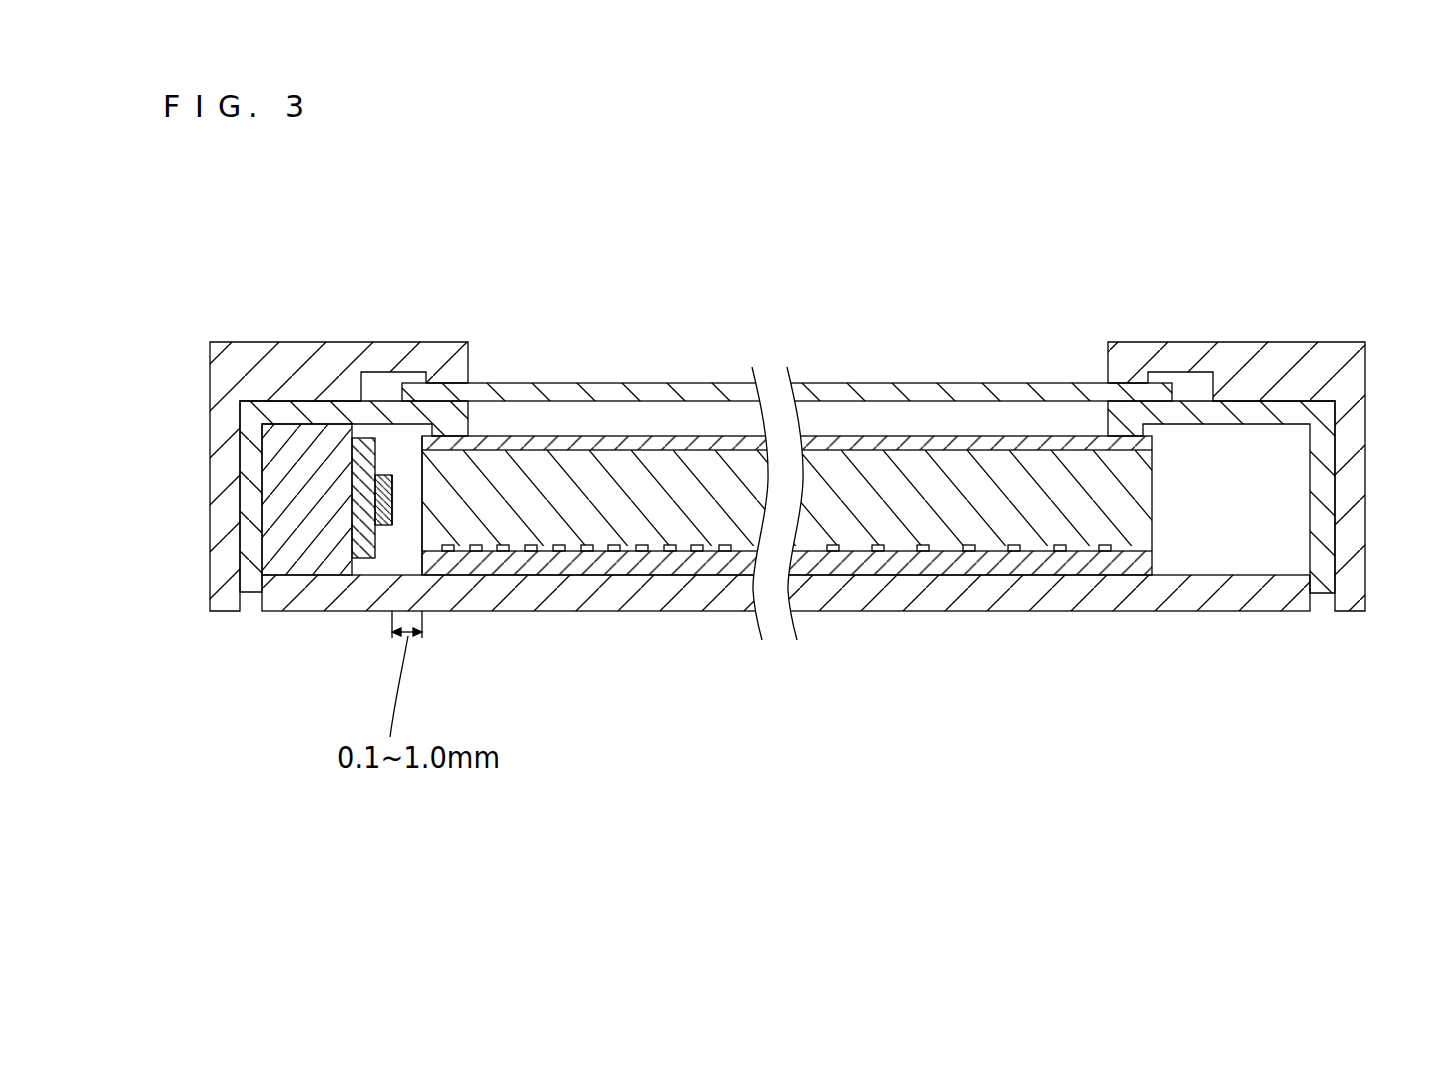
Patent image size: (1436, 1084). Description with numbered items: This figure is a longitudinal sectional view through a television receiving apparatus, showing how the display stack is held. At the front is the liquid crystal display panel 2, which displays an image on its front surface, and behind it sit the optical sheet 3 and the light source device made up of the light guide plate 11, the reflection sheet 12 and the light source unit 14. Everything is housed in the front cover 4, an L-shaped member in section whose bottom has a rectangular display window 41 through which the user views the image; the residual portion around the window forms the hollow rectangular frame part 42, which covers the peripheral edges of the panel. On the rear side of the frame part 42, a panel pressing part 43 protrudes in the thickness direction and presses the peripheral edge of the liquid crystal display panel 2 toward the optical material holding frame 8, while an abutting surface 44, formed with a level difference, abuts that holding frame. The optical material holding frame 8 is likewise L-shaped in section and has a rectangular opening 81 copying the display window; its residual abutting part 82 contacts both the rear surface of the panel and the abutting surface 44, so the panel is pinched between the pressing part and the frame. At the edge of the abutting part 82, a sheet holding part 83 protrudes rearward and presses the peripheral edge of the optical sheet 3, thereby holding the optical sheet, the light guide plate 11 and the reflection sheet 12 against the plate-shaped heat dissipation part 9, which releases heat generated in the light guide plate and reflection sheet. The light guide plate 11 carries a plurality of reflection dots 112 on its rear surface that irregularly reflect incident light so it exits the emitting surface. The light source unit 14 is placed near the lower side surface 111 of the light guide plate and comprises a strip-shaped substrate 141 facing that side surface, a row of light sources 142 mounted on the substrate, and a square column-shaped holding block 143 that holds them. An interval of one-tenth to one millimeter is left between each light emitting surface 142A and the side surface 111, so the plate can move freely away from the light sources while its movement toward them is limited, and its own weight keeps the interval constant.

The liquid crystal display panel 2 is at (995, 383).
The optical sheet 3 is at (903, 434).
The front cover 4 is at (282, 342).
The display window 41 is at (469, 366).
The frame part 42 is at (410, 348).
The panel pressing part 43 is at (450, 377).
The abutting surface 44 is at (282, 393).
The optical material holding frame 8 is at (778, 514).
The opening 81 is at (472, 427).
The abutting part 82 is at (287, 412).
The sheet holding part 83 is at (453, 420).
The heat dissipation part 9 is at (572, 598).
The light guide plate 11 is at (783, 493).
The one side surface 111 is at (420, 477).
The reflection dots 112 is at (607, 549).
The reflection sheet 12 is at (1151, 552).
The light source unit 14 is at (288, 522).
The substrate 141 is at (360, 557).
The light source 142 is at (390, 527).
The light emitting surface 142A is at (402, 472).
The holding block 143 is at (287, 567).